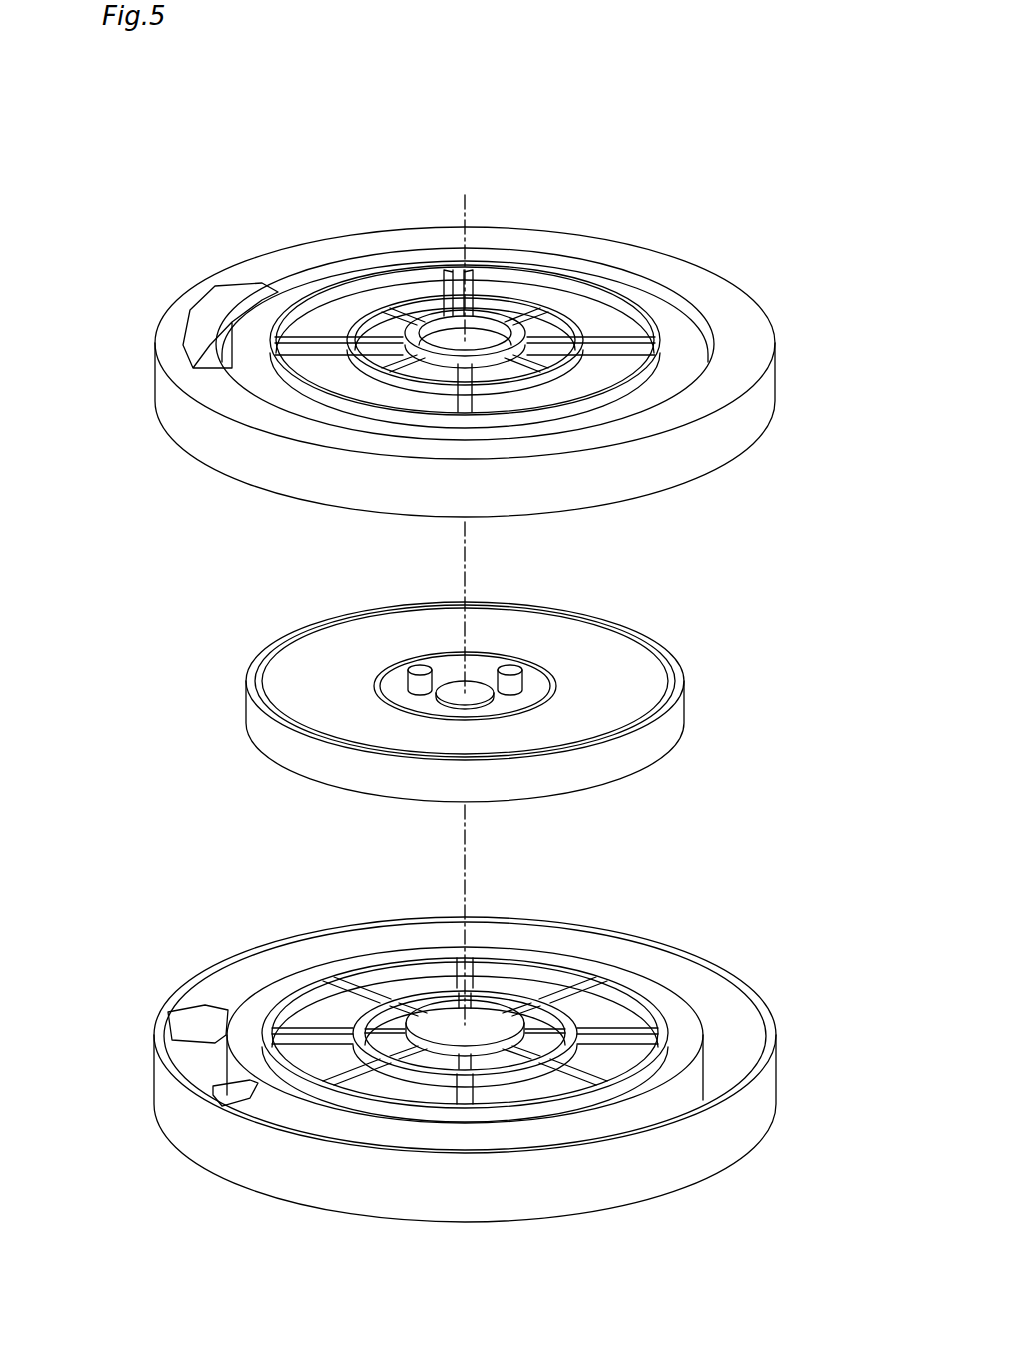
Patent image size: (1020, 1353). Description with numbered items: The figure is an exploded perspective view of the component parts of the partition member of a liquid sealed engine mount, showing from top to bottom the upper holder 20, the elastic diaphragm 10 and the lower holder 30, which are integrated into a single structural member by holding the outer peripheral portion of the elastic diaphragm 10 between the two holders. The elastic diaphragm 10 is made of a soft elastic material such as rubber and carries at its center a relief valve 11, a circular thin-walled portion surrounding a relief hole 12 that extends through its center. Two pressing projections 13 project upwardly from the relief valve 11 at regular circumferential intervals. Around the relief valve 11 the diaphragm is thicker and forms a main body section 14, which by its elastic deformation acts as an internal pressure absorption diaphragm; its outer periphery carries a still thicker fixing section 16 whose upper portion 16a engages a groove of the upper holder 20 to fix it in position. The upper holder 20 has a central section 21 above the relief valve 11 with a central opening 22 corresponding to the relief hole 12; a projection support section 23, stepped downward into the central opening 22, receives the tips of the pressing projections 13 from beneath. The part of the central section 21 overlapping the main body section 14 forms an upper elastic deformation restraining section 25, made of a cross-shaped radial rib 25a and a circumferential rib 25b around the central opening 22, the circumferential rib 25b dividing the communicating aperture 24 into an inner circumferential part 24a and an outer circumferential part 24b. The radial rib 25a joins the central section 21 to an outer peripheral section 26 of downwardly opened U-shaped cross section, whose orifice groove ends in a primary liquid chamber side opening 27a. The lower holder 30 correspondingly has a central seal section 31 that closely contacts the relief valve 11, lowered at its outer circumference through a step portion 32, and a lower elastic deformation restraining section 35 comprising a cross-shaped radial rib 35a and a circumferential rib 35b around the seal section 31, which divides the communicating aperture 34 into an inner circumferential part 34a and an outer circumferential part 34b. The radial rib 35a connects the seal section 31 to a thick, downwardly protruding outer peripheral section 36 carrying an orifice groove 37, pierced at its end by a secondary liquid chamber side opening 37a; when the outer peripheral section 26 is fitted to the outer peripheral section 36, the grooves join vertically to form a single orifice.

The elastic diaphragm 10 is at (455, 677).
The relief valve 11 is at (487, 668).
The relief hole 12 is at (455, 690).
The pressing projections 13 is at (400, 672).
The main body section 14 is at (622, 655).
The fixing section 16 is at (250, 705).
The upper portion of fixing section 16a is at (680, 692).
The upper holder 20 is at (430, 327).
The central section 21 is at (430, 300).
The central opening 22 is at (473, 330).
The projection support section 23 is at (447, 290).
The communicating aperture 24 is at (337, 400).
The inner circumferential part 24a is at (395, 362).
The outer circumferential part 24b is at (335, 385).
The upper elastic deformation restraining section 25 is at (530, 282).
The radial rib 25a is at (567, 312).
The circumferential rib 25b is at (617, 335).
The outer peripheral section 26 is at (740, 305).
The primary liquid chamber side opening 27a is at (205, 320).
The lower holder 30 is at (458, 1087).
The seal section 31 is at (485, 1025).
The step portion 32 is at (410, 1050).
The communicating aperture 34 is at (497, 1139).
The inner circumferential part 34a is at (530, 1060).
The outer circumferential part 34b is at (620, 1045).
The lower elastic deformation restraining section 35 is at (521, 1071).
The radial rib 35a is at (640, 1005).
The circumferential rib 35b is at (580, 1010).
The outer peripheral section 36 is at (190, 1062).
The orifice groove 37 is at (735, 1015).
The secondary liquid chamber side opening 37a is at (228, 1100).